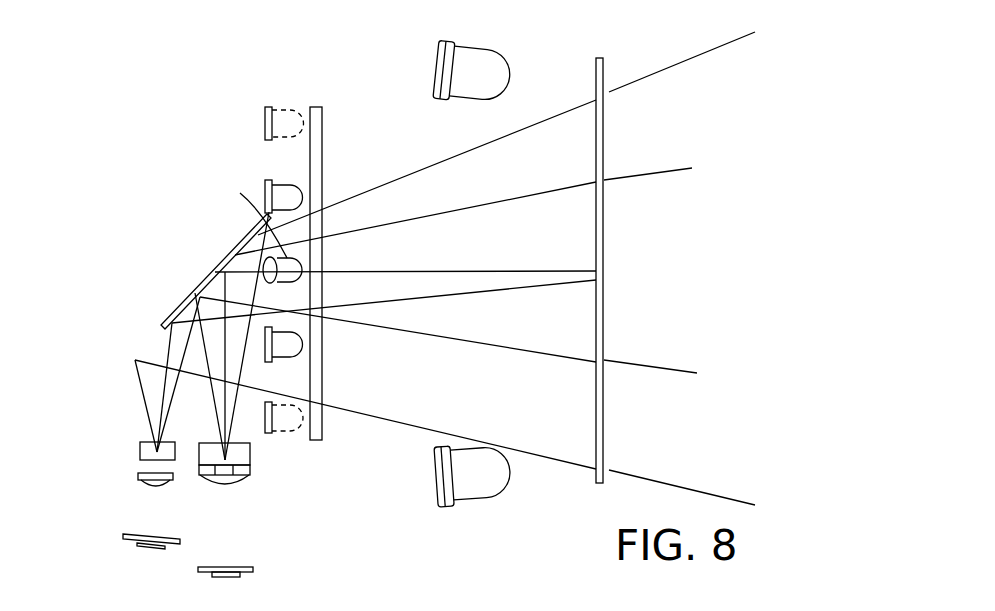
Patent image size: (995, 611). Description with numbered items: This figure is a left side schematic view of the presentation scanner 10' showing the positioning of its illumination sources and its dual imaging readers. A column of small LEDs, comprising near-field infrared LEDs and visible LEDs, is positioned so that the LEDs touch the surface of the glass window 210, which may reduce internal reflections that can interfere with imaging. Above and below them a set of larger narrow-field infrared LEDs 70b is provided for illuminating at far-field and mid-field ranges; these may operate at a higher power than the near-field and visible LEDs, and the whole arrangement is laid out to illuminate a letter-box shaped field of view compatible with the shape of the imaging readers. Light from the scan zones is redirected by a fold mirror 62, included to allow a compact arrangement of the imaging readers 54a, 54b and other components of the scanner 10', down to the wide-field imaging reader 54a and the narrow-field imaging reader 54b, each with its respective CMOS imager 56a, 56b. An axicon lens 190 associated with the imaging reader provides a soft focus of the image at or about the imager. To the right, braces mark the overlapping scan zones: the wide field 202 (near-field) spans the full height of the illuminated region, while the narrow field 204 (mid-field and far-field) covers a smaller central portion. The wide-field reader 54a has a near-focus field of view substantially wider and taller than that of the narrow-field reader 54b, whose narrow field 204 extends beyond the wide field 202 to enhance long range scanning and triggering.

The presentation scanner 10' is at (58, 185).
The fold mirror 62 is at (200, 286).
The glass window 210 is at (323, 145).
The axicon lens 190 is at (139, 473).
The wide-field imaging reader 54a is at (125, 468).
The narrow-field imaging reader 54b is at (257, 440).
The CMOS imager 56a is at (146, 550).
The CMOS imager 56b is at (218, 578).
The narrow-field infrared LEDs 70b is at (482, 64).
The narrow field 204 is at (688, 157).
The wide field 202 is at (763, 23).